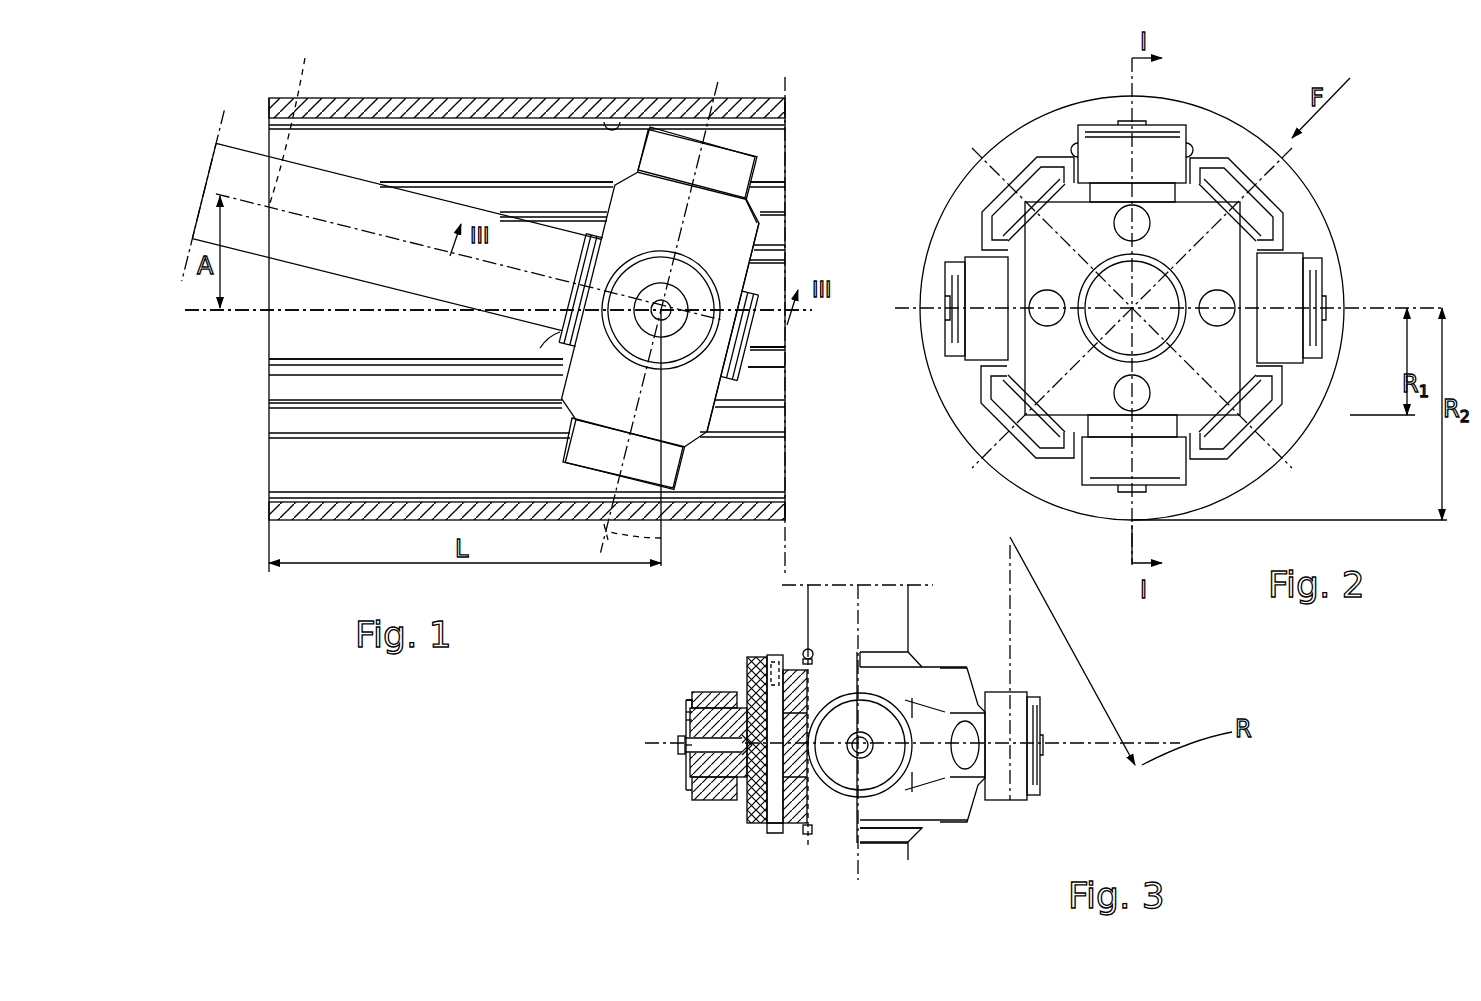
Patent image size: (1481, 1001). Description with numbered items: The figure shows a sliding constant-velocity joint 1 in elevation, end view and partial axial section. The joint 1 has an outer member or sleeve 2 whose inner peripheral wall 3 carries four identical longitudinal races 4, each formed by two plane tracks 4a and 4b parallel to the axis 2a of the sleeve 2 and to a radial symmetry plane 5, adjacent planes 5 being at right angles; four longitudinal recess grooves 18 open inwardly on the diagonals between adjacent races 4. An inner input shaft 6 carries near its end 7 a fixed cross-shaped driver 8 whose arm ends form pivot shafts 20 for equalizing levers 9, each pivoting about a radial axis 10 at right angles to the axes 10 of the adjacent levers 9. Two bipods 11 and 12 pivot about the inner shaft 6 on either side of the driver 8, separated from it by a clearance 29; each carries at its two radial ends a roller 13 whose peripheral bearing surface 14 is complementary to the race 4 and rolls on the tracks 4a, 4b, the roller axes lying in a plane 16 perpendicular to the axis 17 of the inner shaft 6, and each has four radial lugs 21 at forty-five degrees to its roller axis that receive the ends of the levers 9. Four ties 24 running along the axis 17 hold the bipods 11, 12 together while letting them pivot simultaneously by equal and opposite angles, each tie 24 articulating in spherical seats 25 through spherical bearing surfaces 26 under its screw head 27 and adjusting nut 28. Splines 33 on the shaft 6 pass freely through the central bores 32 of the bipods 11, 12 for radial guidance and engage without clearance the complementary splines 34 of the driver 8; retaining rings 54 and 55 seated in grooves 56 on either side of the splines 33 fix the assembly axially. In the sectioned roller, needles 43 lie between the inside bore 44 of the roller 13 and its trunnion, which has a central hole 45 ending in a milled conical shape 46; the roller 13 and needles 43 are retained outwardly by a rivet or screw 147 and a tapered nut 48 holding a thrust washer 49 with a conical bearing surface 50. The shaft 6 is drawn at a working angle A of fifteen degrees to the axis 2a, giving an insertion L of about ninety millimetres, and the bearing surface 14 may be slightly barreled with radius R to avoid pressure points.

In FIG. 1, the sliding constant-velocity joint 1 is at (330, 573).
In FIG. 2, the sliding constant-velocity joint 1 is at (1358, 166).
In FIG. 3, the sliding constant-velocity joint 1 is at (1080, 742).
In FIG. 1, the outer member or sleeve 2 is at (428, 98).
In FIG. 2, the outer member or sleeve 2 is at (1007, 137).
In FIG. 1, the axis of the sleeve 2a is at (200, 318).
In FIG. 1, the inner peripheral wall 3 is at (633, 118).
In FIG. 2, the inner peripheral wall 3 is at (985, 402).
In FIG. 2, the longitudinal race 4 is at (950, 263).
In FIG. 1, the track 4a is at (455, 152).
In FIG. 2, the track 4a is at (1185, 143).
In FIG. 1, the track 4b is at (752, 462).
In FIG. 2, the track 4b is at (1078, 143).
In FIG. 2, the radial symmetry plane 5 is at (1363, 307).
In FIG. 3, the inner input shaft 6 is at (908, 600).
In FIG. 1, the end of the shaft 7 is at (773, 350).
In FIG. 3, the end of the shaft 7 is at (892, 843).
In FIG. 3, the driver 8 is at (917, 672).
In FIG. 3, the equalizing lever 9 is at (1000, 712).
In FIG. 2, the radial axis 10 is at (1304, 130).
In FIG. 1, the bipod 11 is at (758, 231).
In FIG. 2, the bipod 11 is at (1252, 370).
In FIG. 3, the bipod 11 is at (952, 822).
In FIG. 3, the bipod 12 is at (985, 688).
In FIG. 1, the roller 13 is at (733, 143).
In FIG. 2, the roller 13 is at (1303, 243).
In FIG. 3, the roller 13 is at (723, 757).
In FIG. 2, the peripheral bearing surface 14 is at (1107, 150).
In FIG. 3, the peripheral bearing surface 14 is at (1028, 692).
In FIG. 1, the plane 16 is at (665, 538).
In FIG. 1, the axis of the inner shaft 17 is at (299, 116).
In FIG. 3, the axis of the inner shaft 17 is at (867, 607).
In FIG. 1, the longitudinal recess groove 18 is at (757, 202).
In FIG. 2, the longitudinal recess groove 18 is at (990, 217).
In FIG. 3, the pivot shaft 20 is at (968, 738).
In FIG. 2, the radial lug 21 is at (1020, 187).
In FIG. 3, the radial lug 21 is at (985, 820).
In FIG. 2, the tie 24 is at (1213, 322).
In FIG. 3, the tie 24 is at (772, 812).
In FIG. 3, the spherical seat 25 is at (765, 660).
In FIG. 3, the spherical bearing surface 26 is at (747, 687).
In FIG. 3, the screw head 27 is at (781, 826).
In FIG. 3, the adjusting nut 28 is at (790, 690).
In FIG. 3, the clearance 29 is at (855, 850).
In FIG. 3, the central bore 32 is at (812, 690).
In FIG. 3, the splines 33 is at (808, 648).
In FIG. 3, the complementary splines 34 is at (870, 647).
In FIG. 3, the needles 43 is at (700, 690).
In FIG. 3, the inside bore 44 is at (708, 692).
In FIG. 3, the central hole 45 is at (693, 803).
In FIG. 3, the milled conical shape 46 is at (683, 757).
In FIG. 3, the tapered nut 48 is at (687, 727).
In FIG. 3, the thrust washer 49 is at (687, 715).
In FIG. 3, the conical bearing surface 50 is at (683, 738).
In FIG. 3, the retaining ring 54 is at (918, 833).
In FIG. 1, the retaining ring 55 is at (540, 352).
In FIG. 3, the retaining ring 55 is at (957, 662).
In FIG. 3, the groove 56 is at (809, 650).
In FIG. 3, the screw 147 is at (680, 757).